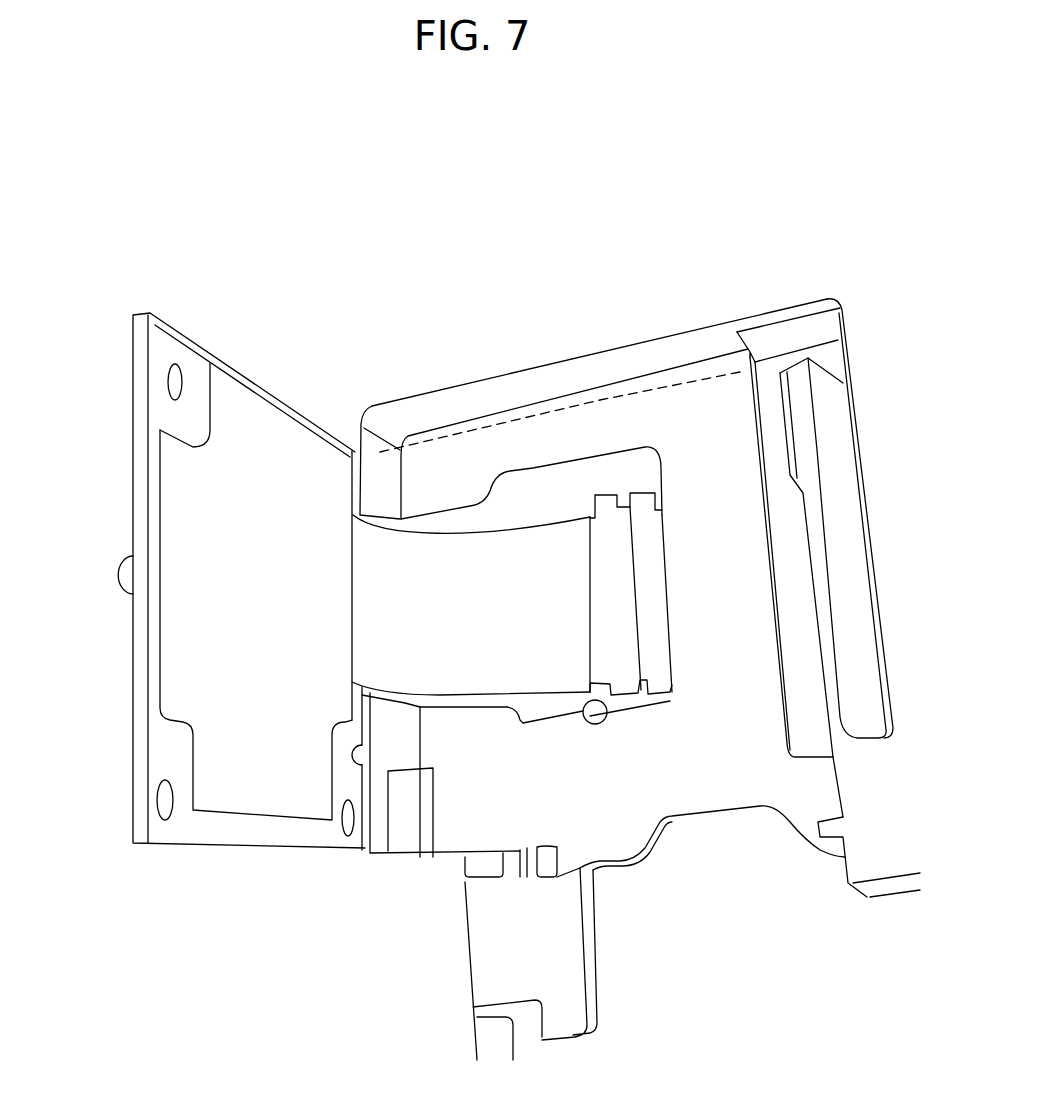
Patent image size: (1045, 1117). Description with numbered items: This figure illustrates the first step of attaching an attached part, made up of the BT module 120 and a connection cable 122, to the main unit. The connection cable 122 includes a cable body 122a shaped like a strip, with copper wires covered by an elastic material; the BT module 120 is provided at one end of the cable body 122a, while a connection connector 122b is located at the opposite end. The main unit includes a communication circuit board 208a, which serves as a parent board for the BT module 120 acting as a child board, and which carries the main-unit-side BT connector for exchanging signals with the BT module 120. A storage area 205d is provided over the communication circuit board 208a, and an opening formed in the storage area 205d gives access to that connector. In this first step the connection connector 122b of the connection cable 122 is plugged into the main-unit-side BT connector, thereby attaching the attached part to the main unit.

The BT module 120 is at (128, 493).
The connection cable 122 is at (533, 703).
The cable body 122a is at (520, 580).
The connection connector 122b is at (604, 495).
The storage area 205d is at (450, 406).
The communication circuit board 208a is at (715, 370).